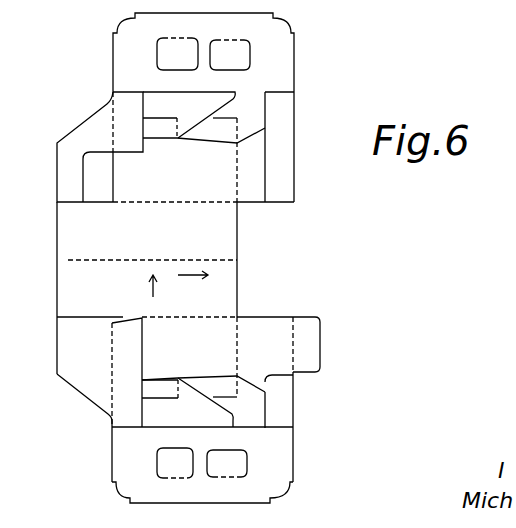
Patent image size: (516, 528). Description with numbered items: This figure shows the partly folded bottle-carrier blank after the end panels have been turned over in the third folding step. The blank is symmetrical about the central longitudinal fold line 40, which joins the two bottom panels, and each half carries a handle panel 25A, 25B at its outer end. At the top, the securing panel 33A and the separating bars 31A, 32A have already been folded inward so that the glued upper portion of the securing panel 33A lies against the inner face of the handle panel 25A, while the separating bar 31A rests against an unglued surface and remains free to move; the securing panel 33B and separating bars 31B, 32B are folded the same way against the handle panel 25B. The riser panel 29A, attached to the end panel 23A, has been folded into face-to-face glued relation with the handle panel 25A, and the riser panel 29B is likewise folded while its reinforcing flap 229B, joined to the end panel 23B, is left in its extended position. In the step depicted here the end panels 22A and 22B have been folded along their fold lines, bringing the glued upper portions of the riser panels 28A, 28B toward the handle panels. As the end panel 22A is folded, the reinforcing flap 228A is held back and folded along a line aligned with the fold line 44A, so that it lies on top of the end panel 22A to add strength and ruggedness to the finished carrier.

The handle panel 25A is at (122, 43).
The riser panel 28A is at (130, 101).
The fold line 44A is at (113, 122).
The securing panel 33A is at (185, 105).
The separating bar 31A is at (160, 128).
The separating bar 32A is at (212, 127).
The riser panel 29A is at (281, 127).
The end panel 22A is at (65, 149).
The reinforcing flap 228A is at (97, 163).
The end panel 23A is at (246, 190).
The central longitudinal fold line 40 is at (113, 259).
The end panel 23B is at (252, 330).
The reinforcing flap 229B is at (307, 337).
The end panel 22B is at (66, 338).
The riser panel 28B is at (131, 342).
The separating bar 31B is at (150, 387).
The separating bar 32B is at (211, 390).
The securing panel 33B is at (172, 415).
The riser panel 29B is at (282, 418).
The handle panel 25B is at (280, 468).